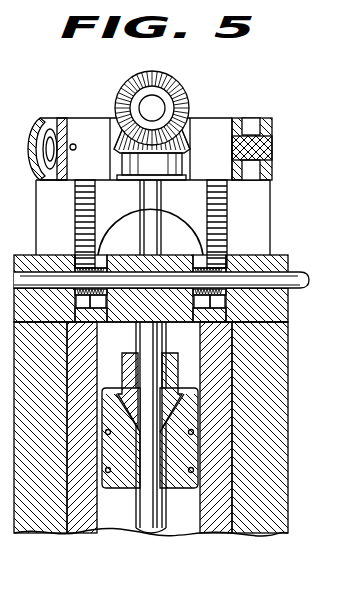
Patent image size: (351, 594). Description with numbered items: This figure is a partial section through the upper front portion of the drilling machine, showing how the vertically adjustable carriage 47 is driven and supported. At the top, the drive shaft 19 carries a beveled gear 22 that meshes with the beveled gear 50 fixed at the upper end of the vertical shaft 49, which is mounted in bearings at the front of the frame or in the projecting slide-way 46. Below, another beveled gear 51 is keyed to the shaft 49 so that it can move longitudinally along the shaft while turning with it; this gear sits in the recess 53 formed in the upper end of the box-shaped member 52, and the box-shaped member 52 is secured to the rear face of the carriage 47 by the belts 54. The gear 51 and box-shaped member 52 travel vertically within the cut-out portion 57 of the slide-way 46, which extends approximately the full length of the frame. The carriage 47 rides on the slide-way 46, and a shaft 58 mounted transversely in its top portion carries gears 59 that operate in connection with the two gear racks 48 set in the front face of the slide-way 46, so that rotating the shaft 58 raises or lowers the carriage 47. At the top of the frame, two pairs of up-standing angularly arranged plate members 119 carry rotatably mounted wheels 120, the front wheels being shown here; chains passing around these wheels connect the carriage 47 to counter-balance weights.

The drive shaft 19 is at (152, 108).
The beveled gear 22 is at (154, 76).
The slide-way 46 is at (262, 193).
The carriage 47 is at (276, 258).
The gear racks 48 is at (207, 198).
The vertical shaft 49 is at (152, 532).
The beveled gear 50 is at (188, 112).
The beveled gear 51 is at (187, 420).
The box-shaped member 52 is at (122, 492).
The recess 53 is at (178, 412).
The belts 54 is at (190, 474).
The cut-out portion 57 is at (193, 230).
The shaft 58 is at (303, 278).
The gears 59 is at (77, 262).
The plate members 119 is at (149, 149).
The wheels 120 is at (60, 126).